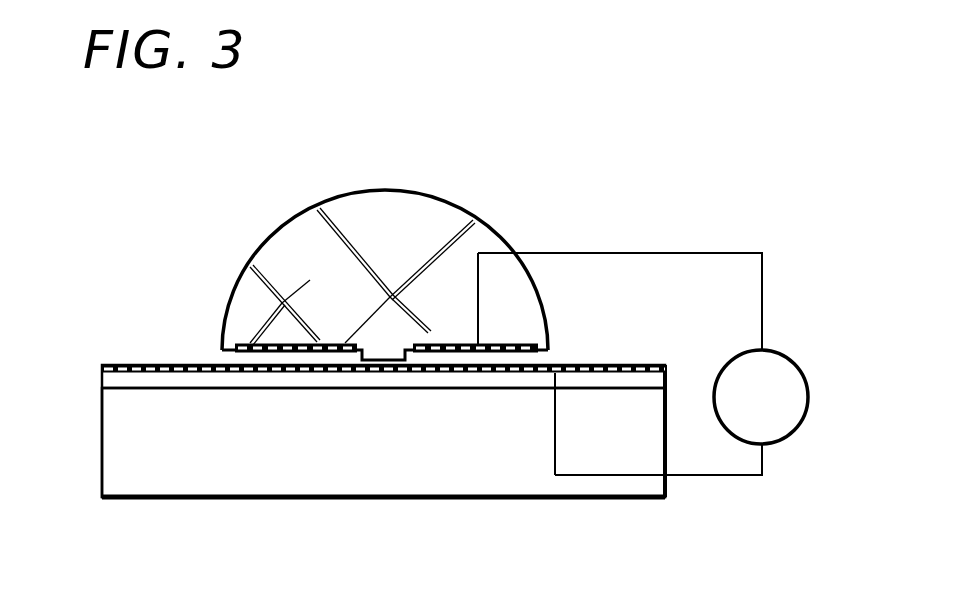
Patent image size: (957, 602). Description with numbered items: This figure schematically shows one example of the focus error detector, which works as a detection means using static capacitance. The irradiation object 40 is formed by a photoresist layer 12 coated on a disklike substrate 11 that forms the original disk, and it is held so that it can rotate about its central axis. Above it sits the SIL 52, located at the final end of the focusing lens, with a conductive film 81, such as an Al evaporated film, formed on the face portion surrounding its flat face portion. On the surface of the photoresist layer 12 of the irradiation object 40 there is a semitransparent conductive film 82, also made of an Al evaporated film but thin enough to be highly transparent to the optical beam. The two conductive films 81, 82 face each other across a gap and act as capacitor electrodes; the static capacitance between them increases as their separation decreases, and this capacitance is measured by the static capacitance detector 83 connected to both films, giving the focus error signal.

The SIL 52 is at (385, 190).
The conductive film 81 is at (457, 345).
The semitransparent conductive film 82 is at (568, 365).
The static capacitance detector 83 is at (806, 382).
The disklike substrate 11 is at (322, 470).
The photoresist layer 12 is at (383, 388).
The irradiation object 40 is at (475, 498).